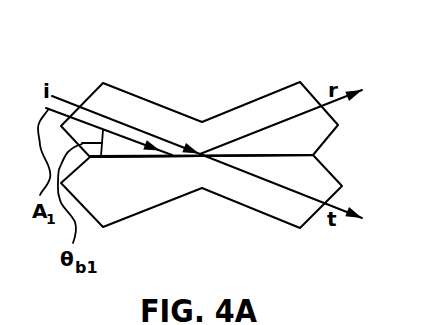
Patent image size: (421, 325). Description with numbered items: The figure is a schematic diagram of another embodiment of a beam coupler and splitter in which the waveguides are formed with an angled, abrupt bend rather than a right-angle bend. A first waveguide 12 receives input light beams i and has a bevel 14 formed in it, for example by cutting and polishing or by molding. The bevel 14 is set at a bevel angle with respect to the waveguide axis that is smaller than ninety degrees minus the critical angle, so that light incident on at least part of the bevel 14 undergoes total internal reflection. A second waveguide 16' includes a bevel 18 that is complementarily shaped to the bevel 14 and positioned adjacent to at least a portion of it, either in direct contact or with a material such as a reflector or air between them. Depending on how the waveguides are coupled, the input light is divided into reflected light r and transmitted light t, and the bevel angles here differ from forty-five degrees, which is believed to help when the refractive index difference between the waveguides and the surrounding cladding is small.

The first waveguide 12 is at (145, 118).
The bevel 14 is at (292, 156).
The second waveguide 16' is at (148, 235).
The bevel 18 is at (237, 156).